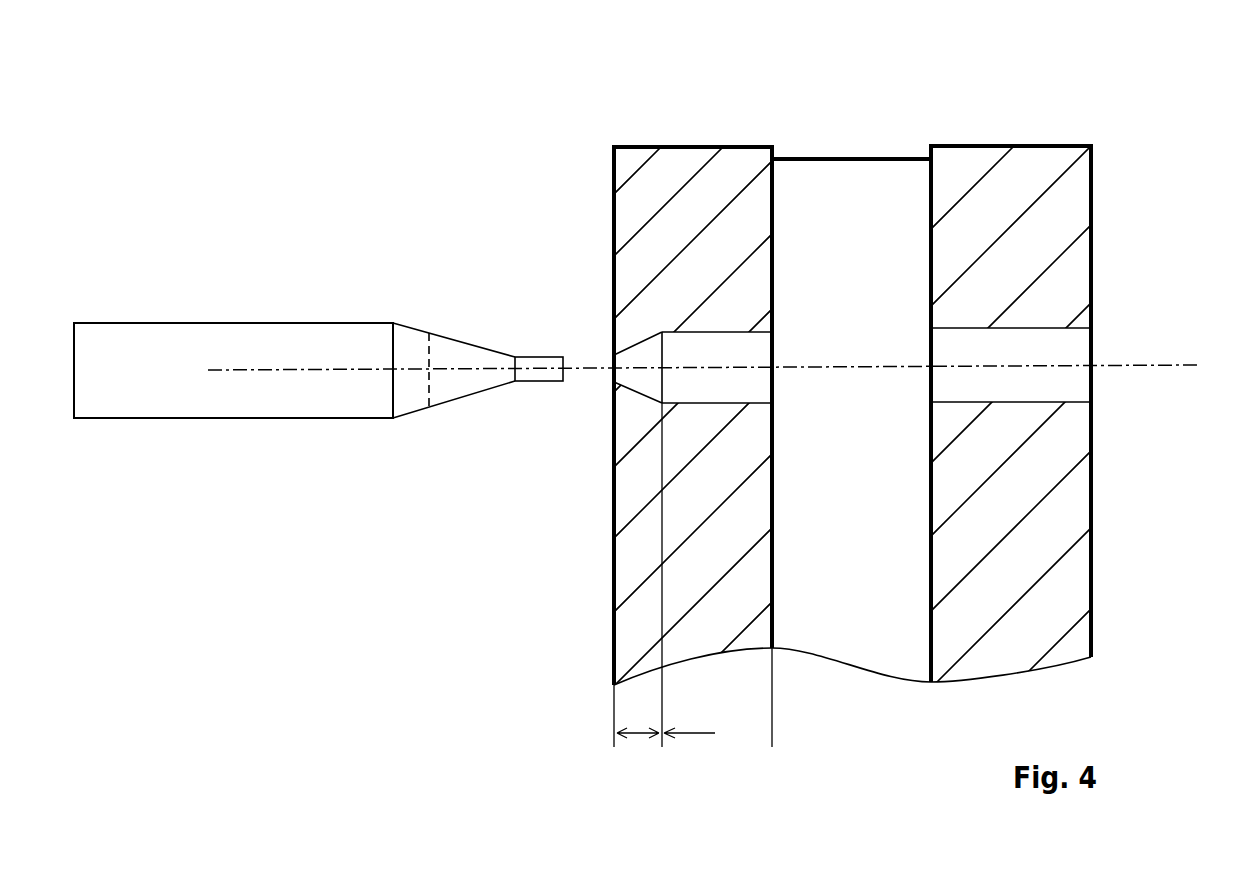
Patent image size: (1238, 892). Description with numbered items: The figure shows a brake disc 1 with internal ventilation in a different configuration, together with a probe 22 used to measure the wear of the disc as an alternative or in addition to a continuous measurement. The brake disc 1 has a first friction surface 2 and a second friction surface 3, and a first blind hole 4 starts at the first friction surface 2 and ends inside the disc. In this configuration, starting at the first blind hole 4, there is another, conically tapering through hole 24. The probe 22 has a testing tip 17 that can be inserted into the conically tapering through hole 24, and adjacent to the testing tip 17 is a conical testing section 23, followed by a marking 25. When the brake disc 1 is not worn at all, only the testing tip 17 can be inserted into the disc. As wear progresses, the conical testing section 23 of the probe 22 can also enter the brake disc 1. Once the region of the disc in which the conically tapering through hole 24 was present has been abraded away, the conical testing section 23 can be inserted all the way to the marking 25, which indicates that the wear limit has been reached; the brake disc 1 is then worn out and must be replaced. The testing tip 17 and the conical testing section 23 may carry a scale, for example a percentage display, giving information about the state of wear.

The brake disc 1 is at (855, 109).
The first friction surface 2 is at (1092, 205).
The second friction surface 3 is at (612, 195).
The first blind hole 4 is at (747, 352).
The testing tip 17 is at (540, 328).
The probe 22 is at (246, 236).
The conical testing section 23 is at (417, 390).
The conically tapering through hole 24 is at (630, 371).
The marking 25 is at (429, 357).